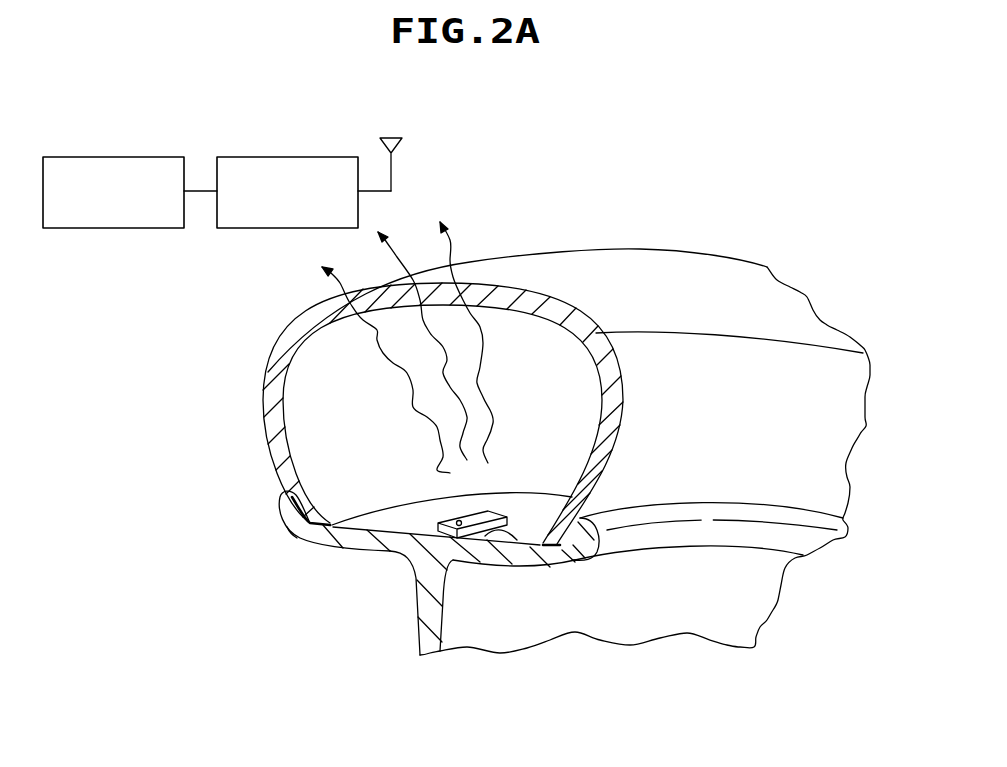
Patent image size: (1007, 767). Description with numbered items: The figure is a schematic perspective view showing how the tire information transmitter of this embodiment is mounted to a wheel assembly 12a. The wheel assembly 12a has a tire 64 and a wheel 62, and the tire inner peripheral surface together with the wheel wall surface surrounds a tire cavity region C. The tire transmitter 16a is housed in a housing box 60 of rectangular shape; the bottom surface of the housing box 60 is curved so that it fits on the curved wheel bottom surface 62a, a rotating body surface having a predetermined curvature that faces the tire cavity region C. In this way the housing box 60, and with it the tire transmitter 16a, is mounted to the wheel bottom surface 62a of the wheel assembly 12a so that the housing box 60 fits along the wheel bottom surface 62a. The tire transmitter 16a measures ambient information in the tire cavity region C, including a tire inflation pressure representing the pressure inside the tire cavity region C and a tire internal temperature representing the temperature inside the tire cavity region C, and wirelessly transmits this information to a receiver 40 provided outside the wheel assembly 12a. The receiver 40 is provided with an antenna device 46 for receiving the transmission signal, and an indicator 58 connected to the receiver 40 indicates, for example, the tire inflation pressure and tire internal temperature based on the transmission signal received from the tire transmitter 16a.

The indicator 58 is at (107, 228).
The receiver 40 is at (250, 228).
The antenna device 46 is at (402, 140).
The wheel assembly 12a is at (711, 148).
The tire 64 is at (552, 268).
The tire cavity region C is at (312, 437).
The housing box 60 is at (561, 580).
The tire information transmitter 16a is at (410, 540).
The wheel bottom surface 62a is at (487, 532).
The wheel 62 is at (513, 560).